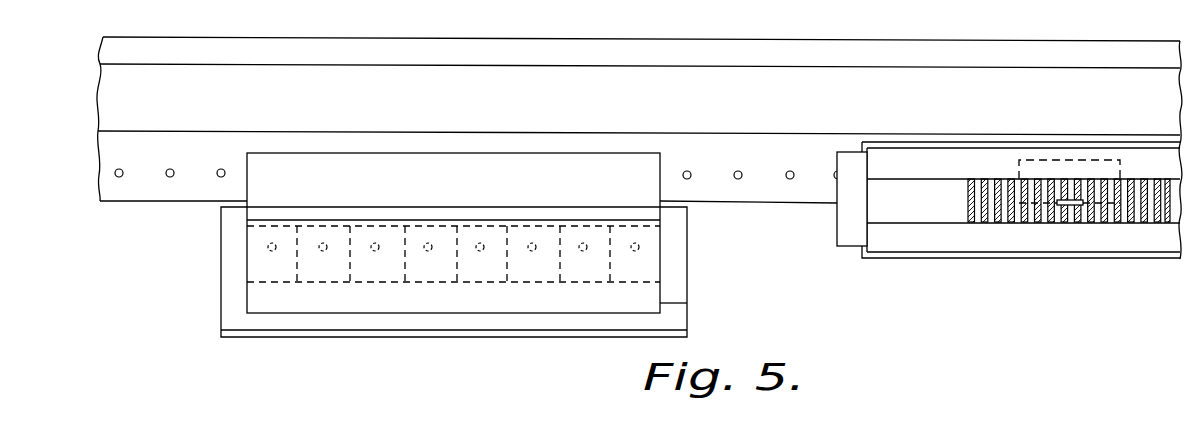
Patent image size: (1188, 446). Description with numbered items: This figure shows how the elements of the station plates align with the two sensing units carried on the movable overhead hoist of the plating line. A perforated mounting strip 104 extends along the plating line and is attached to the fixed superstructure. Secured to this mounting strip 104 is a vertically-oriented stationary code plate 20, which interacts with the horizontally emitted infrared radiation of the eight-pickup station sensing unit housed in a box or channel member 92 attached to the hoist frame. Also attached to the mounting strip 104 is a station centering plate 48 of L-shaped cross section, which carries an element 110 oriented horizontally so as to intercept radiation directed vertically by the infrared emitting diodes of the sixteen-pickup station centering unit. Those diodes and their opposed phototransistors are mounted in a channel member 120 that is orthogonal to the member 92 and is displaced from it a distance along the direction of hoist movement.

The stationary code plate 20 is at (613, 153).
The station centering plate 48 is at (1019, 164).
The channel member 92 is at (221, 262).
The perforated mounting strip 104 is at (143, 201).
The element 110 is at (1068, 206).
The channel member 120 is at (837, 230).